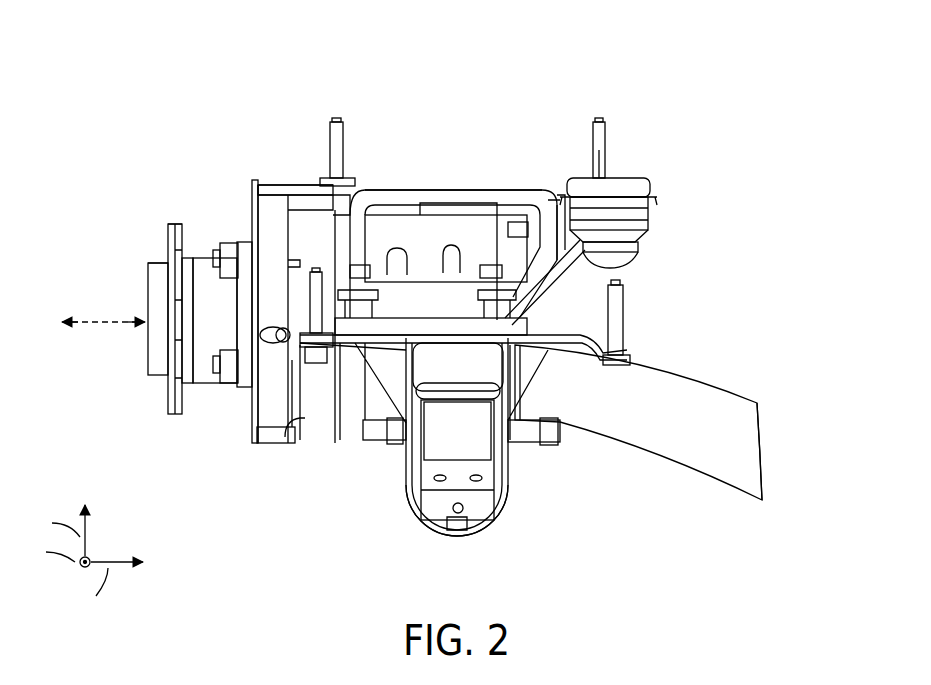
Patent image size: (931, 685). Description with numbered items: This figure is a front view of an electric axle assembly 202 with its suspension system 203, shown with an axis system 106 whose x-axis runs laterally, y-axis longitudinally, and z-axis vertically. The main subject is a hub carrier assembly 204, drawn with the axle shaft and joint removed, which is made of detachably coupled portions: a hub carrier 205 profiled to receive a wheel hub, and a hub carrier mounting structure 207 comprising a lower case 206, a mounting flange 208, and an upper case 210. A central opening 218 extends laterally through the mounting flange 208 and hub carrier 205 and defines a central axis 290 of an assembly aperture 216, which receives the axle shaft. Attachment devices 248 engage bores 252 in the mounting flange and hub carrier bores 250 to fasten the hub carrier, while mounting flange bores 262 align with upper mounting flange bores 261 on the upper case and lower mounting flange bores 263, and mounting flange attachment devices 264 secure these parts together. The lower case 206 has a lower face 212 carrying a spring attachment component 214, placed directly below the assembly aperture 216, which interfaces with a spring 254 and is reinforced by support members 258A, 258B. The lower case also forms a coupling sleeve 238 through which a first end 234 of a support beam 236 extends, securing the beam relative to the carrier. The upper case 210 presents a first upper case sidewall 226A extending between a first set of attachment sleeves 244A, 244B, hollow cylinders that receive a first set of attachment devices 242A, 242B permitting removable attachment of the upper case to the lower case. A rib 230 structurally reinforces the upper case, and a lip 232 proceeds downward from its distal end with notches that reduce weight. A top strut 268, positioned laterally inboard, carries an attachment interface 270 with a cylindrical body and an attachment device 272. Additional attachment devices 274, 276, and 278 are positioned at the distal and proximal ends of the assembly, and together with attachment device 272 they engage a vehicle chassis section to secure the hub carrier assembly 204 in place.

The axis system 106 is at (113, 537).
The electric axle assembly 202 is at (777, 188).
The suspension system 203 is at (733, 132).
The hub carrier assembly 204 is at (130, 155).
The hub carrier 205 is at (100, 240).
The lower case 206 is at (353, 530).
The hub carrier mounting structure 207 is at (185, 72).
The mounting flange 208 is at (243, 210).
The upper case 210 is at (447, 102).
The lower face 212 is at (338, 407).
The spring attachment component 214 is at (512, 522).
The assembly aperture 216 is at (512, 275).
The central opening 218 is at (130, 297).
The first upper case sidewall 226A is at (427, 210).
The rib 230 is at (458, 237).
The lip 232 is at (325, 265).
The first end 234 is at (298, 373).
The support beam 236 is at (740, 380).
The coupling sleeve 238 is at (357, 338).
The first attachment device 242A is at (366, 293).
The second attachment device 242B is at (475, 290).
The first attachment sleeve 244A is at (373, 287).
The second attachment sleeve 244B is at (480, 307).
The attachment devices 248 is at (213, 255).
The hub carrier bores 250 is at (215, 258).
The bores 252 is at (238, 230).
The spring 254 is at (413, 480).
The support member 258A is at (397, 372).
The support member 258B is at (530, 370).
The upper mounting flange bores 261 is at (270, 170).
The mounting flange bores 262 is at (250, 190).
The lower mounting flange bores 263 is at (302, 438).
The mounting flange attachment devices 264 is at (255, 420).
The top strut 268 is at (620, 152).
The attachment interface 270 is at (667, 205).
The attachment device 272 is at (600, 168).
The attachment device 274 is at (335, 118).
The attachment device 276 is at (313, 268).
The attachment device 278 is at (617, 303).
The central axis 290 is at (90, 330).